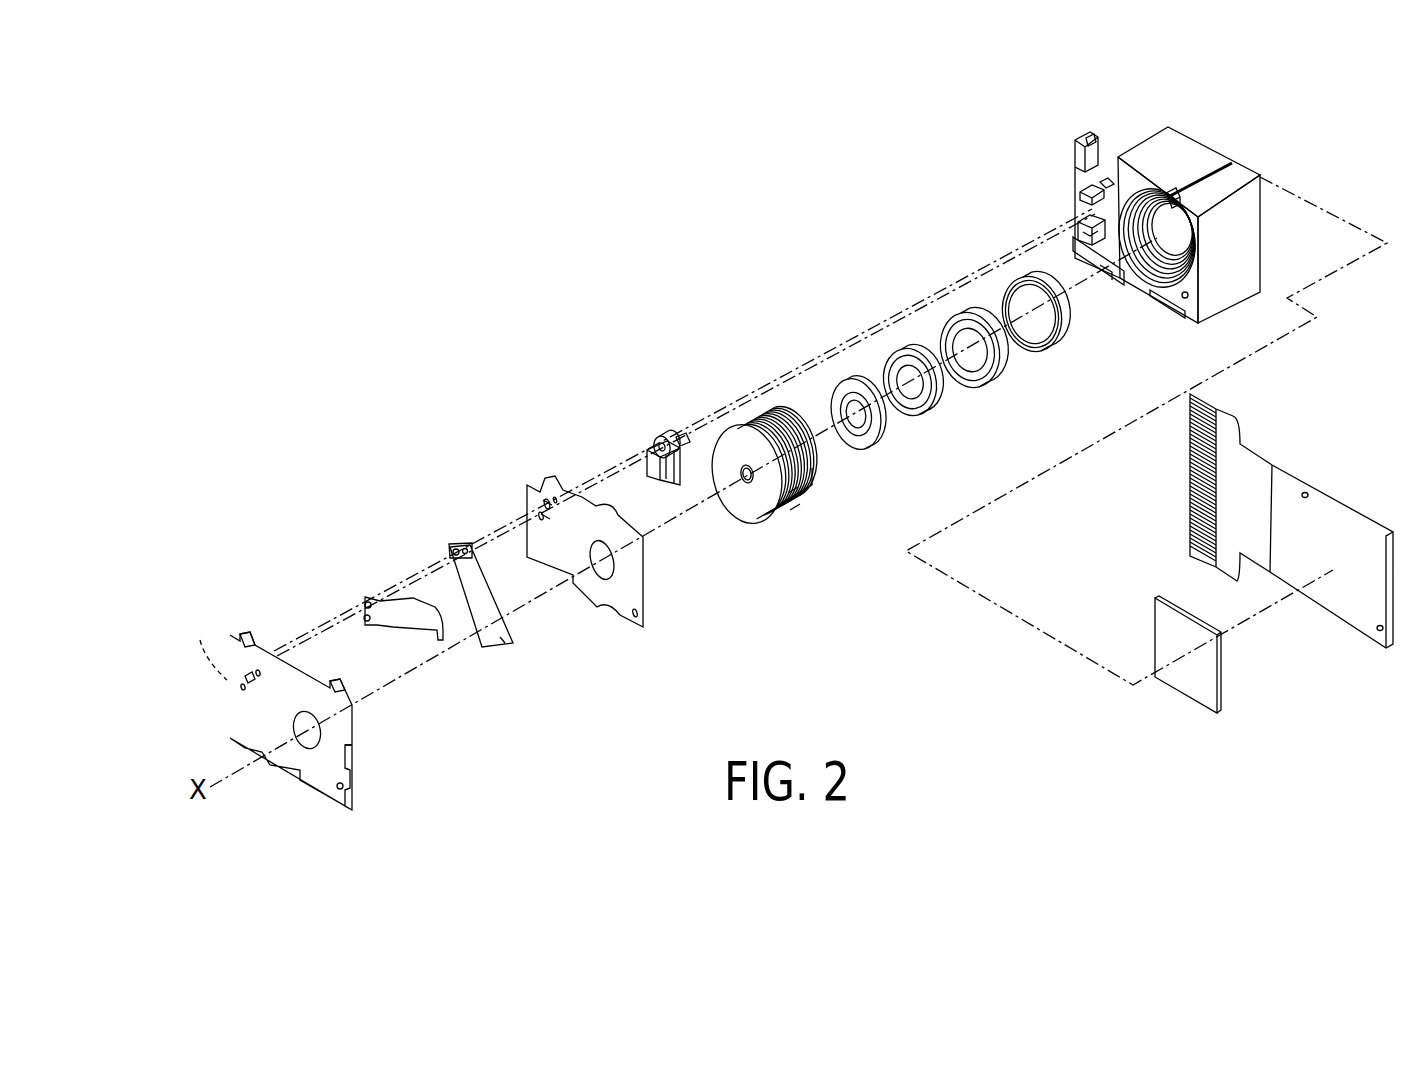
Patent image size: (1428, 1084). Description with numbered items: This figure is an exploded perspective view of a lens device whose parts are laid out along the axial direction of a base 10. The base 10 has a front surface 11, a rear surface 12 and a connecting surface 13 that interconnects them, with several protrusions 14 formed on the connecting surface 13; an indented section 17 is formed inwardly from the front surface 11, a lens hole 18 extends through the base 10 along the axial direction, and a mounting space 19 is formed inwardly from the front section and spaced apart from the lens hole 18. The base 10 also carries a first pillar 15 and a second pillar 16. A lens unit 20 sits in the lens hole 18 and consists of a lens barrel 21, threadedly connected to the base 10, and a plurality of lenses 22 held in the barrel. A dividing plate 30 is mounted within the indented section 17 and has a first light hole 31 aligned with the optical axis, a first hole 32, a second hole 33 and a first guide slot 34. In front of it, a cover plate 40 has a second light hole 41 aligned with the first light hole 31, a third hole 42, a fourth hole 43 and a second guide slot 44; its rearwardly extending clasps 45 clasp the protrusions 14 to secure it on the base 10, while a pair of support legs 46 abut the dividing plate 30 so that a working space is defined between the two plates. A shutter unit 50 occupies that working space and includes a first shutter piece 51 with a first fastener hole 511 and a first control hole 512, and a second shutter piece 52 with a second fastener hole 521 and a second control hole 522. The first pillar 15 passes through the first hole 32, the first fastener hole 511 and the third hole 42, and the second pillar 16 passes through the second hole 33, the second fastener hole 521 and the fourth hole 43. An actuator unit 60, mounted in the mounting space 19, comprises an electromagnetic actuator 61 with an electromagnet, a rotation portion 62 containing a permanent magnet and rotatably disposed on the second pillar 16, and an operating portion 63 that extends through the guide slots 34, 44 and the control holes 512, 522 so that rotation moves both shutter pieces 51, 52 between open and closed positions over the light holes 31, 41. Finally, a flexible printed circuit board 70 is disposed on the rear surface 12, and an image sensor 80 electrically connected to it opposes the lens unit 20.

The base 10 is at (1158, 220).
The front surface 11 is at (1075, 150).
The rear surface 12 is at (1213, 147).
The connecting surface 13 is at (1167, 133).
The protrusions 14 is at (1092, 134).
The first pillar 15 is at (1106, 182).
The second pillar 16 is at (1082, 186).
The indented section 17 is at (1167, 302).
The lens hole 18 is at (1140, 270).
The mounting space 19 is at (1100, 210).
The lens unit 20 is at (767, 505).
The lens barrel 21 is at (775, 520).
The lenses 22 is at (877, 447).
The dividing plate 30 is at (561, 529).
The first light hole 31 is at (608, 571).
The first hole 32 is at (556, 497).
The second hole 33 is at (538, 514).
The first guide slot 34 is at (546, 500).
The cover plate 40 is at (270, 701).
The second light hole 41 is at (310, 742).
The third hole 42 is at (255, 668).
The fourth hole 43 is at (240, 687).
The second guide slot 44 is at (232, 667).
The clasps 45 is at (240, 630).
The support legs 46 is at (200, 640).
The shutter unit 50 is at (432, 602).
The first shutter piece 51 is at (466, 587).
The first fastener hole 511 is at (461, 543).
The first control hole 512 is at (462, 546).
The second shutter piece 52 is at (399, 621).
The second fastener hole 521 is at (372, 625).
The second control hole 522 is at (366, 598).
The actuator unit 60 is at (669, 467).
The electromagnetic actuator 61 is at (653, 473).
The rotation portion 62 is at (680, 437).
The operating portion 63 is at (663, 430).
The flexible printed circuit board 70 is at (1362, 620).
The image sensor 80 is at (1190, 688).